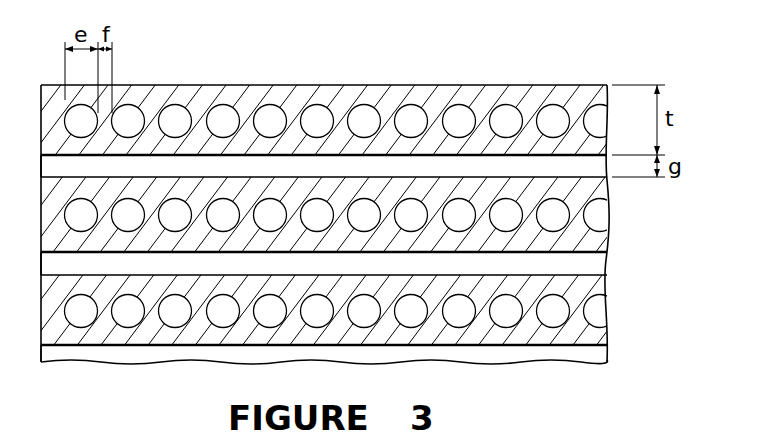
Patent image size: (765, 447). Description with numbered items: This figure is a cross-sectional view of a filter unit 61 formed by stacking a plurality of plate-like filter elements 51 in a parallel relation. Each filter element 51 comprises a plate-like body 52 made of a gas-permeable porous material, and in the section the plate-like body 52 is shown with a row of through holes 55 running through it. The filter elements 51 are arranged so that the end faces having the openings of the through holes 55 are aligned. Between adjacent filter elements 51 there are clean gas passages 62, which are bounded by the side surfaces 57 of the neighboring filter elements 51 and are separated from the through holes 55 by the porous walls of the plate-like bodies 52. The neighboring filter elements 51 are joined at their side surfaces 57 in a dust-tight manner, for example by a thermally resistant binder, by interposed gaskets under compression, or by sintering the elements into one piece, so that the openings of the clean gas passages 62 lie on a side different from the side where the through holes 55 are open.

The filter element 51 is at (582, 82).
The plate-like body 52 is at (522, 97).
The through holes 55 is at (177, 118).
The side surfaces 57 is at (457, 84).
The filter unit 61 is at (113, 369).
The clean gas passages 62 is at (383, 167).